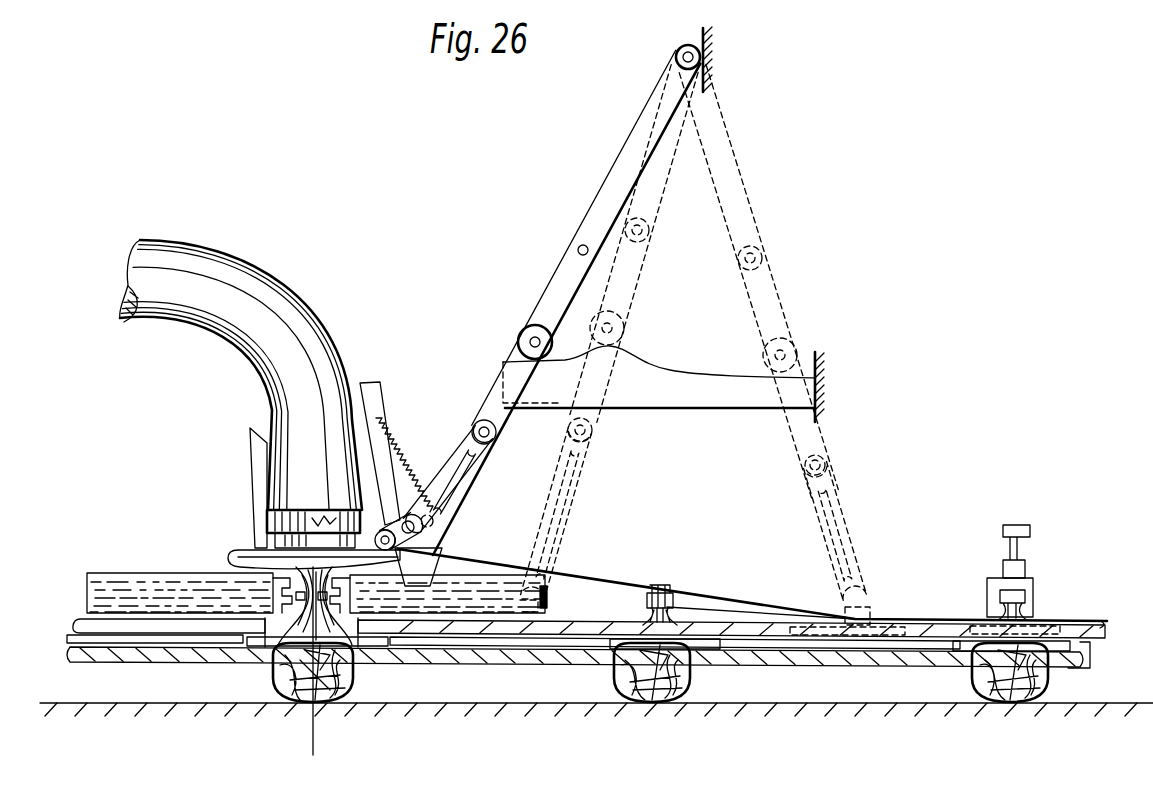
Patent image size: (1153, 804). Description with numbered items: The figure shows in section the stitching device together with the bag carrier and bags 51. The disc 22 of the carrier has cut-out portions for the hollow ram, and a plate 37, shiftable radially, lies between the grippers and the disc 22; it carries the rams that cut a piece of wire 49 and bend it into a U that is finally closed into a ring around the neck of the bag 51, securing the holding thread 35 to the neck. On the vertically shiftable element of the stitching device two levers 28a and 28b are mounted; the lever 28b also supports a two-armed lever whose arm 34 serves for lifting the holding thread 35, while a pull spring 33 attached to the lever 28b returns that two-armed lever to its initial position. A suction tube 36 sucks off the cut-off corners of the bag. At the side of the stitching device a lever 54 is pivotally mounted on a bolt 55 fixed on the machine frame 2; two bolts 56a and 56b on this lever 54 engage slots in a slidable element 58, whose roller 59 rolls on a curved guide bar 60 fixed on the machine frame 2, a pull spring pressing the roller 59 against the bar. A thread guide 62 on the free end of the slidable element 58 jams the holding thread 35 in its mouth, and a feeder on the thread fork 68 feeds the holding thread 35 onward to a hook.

The machine frame 2 is at (712, 78).
The disc 22 is at (92, 656).
The lever 28a is at (249, 490).
The lever 28b is at (372, 402).
The pull spring 33 is at (366, 536).
The arm 34 is at (388, 533).
The holding thread 35 is at (706, 614).
The suction tube 36 is at (200, 262).
The plate 37 is at (100, 600).
The piece of wire 49 is at (272, 650).
The bag 51 is at (352, 679).
The lever 54 is at (634, 150).
The bolt 55 is at (677, 50).
The bolt 56a is at (496, 432).
The bolt 56b is at (578, 246).
The slidable element 58 is at (468, 492).
The roller 59 is at (522, 334).
The curved guide bar 60 is at (672, 392).
The thread guide 62 is at (440, 557).
The thread fork 68 is at (897, 628).